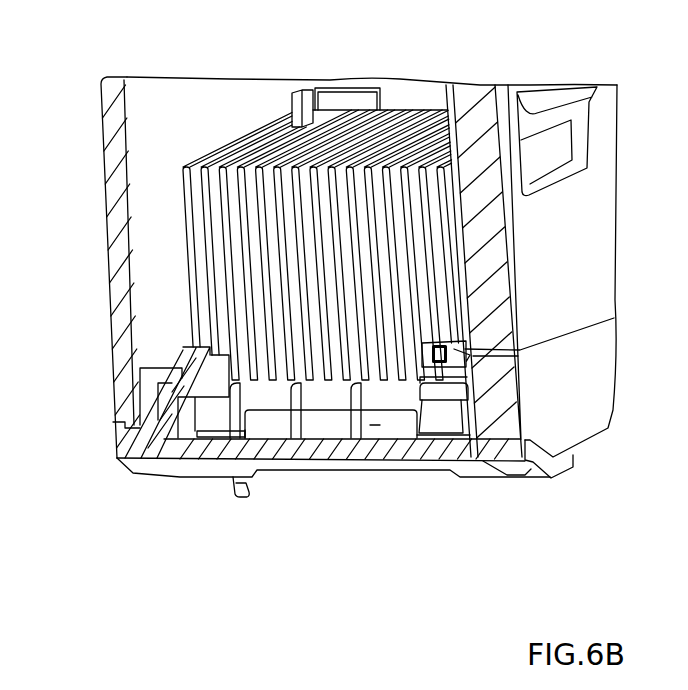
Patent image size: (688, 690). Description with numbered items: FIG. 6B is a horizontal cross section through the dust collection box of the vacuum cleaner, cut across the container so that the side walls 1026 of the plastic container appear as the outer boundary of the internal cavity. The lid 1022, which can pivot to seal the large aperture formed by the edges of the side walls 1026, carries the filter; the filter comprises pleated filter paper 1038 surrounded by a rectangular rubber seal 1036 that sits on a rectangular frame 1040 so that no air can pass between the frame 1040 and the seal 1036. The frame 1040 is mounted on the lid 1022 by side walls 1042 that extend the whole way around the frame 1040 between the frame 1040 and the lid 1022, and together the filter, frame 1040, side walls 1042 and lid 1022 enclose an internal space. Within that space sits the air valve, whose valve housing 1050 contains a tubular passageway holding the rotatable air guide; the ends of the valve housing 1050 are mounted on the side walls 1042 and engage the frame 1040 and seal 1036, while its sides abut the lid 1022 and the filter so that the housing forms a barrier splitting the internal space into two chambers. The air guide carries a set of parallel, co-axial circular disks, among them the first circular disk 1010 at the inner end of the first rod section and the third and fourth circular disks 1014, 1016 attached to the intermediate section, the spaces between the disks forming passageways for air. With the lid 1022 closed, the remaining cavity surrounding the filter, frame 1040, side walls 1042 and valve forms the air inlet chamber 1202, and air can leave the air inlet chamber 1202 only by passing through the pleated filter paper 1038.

The air inlet chamber 1202 is at (219, 97).
The side walls 1026 is at (108, 142).
The rubber seal 1036 is at (192, 356).
The frame 1040 is at (172, 393).
The side walls 1042 is at (152, 399).
The pleated filter paper 1038 is at (262, 462).
The fourth circular disk 1016 is at (265, 423).
The third circular disk 1014 is at (315, 428).
The lid 1022 is at (377, 427).
The first circular disk 1010 is at (447, 417).
The valve housing 1050 is at (458, 437).